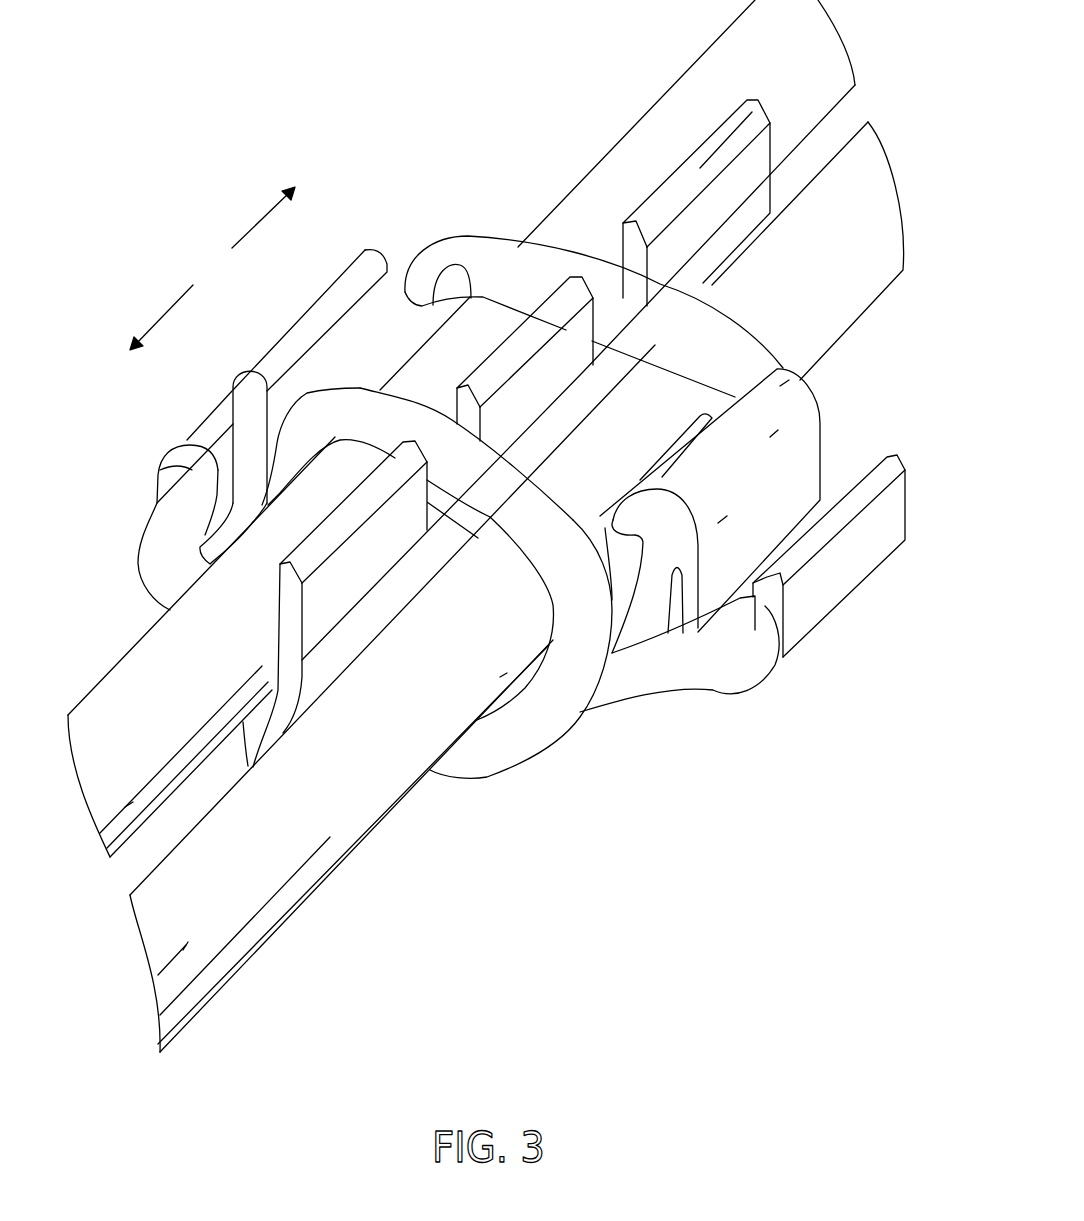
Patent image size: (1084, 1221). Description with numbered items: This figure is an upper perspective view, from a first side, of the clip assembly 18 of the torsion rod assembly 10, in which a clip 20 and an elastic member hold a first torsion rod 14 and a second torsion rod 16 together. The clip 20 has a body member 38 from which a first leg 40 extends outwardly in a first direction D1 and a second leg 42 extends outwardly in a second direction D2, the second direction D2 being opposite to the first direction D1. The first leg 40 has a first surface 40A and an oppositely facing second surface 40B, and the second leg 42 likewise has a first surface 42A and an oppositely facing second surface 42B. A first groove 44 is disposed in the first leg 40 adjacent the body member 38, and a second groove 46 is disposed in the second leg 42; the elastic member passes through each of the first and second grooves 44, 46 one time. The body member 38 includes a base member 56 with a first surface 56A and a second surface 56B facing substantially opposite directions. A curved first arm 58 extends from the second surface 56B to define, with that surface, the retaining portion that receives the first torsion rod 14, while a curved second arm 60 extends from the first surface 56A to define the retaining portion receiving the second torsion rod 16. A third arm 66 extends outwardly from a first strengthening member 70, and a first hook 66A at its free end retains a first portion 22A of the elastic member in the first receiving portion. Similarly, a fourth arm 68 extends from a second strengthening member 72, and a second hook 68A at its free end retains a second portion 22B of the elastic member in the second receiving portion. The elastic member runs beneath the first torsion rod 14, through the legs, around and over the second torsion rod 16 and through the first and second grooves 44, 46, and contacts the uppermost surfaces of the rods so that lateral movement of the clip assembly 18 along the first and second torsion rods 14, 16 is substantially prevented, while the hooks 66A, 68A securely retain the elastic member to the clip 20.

The torsion rod assembly 10 is at (382, 125).
The first torsion rod 14 is at (260, 947).
The second torsion rod 16 is at (107, 677).
The clip assembly 18 is at (603, 772).
The clip 20 is at (742, 710).
The first portion of the elastic member 22A is at (748, 618).
The second portion of the elastic member 22B is at (217, 470).
The body member 38 is at (515, 318).
The first leg 40 is at (302, 535).
The first surface of the first leg 40A is at (278, 627).
The second surface of the first leg 40B is at (367, 600).
The second leg 42 is at (680, 170).
The first surface of the second leg 42A is at (622, 247).
The second surface of the second leg 42B is at (733, 217).
The first groove 44 is at (447, 513).
The second groove 46 is at (613, 347).
The base member 56 is at (492, 350).
The first surface of the base member 56A is at (448, 407).
The second surface of the base member 56B is at (543, 410).
The first arm 58 is at (617, 533).
The second arm 60 is at (430, 312).
The third arm 66 is at (857, 595).
The first hook 66A is at (742, 637).
The fourth arm 68 is at (158, 486).
The second hook 68A is at (236, 440).
The first strengthening member 70 is at (780, 408).
The second strengthening member 72 is at (303, 330).
The first direction D1 is at (163, 312).
The second direction D2 is at (253, 227).